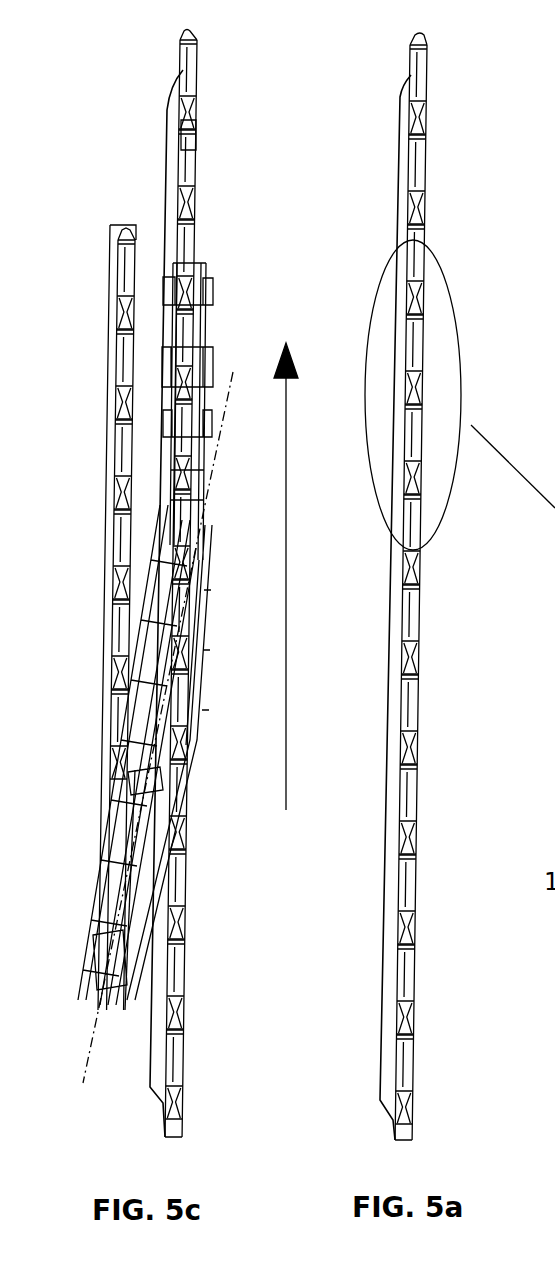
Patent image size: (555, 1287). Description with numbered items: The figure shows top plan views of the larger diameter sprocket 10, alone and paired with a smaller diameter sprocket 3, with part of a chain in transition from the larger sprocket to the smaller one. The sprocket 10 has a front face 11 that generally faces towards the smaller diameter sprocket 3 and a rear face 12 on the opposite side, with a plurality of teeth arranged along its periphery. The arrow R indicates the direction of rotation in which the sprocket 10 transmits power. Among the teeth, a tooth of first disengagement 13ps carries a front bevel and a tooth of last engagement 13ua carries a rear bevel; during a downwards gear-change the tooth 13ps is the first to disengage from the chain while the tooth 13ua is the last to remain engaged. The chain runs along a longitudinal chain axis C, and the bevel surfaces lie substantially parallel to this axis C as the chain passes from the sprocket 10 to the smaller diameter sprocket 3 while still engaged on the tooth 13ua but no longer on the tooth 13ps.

In FIG. 5C, the smaller diameter sprocket 3 is at (107, 200).
In FIG. 5C, the sprocket 10 is at (203, 82).
In FIG. 5A, the sprocket 10 is at (450, 87).
In FIG. 5C, the front face 11 is at (167, 135).
In FIG. 5C, the rear face 12 is at (198, 133).
In FIG. 5C, the tooth of last engagement 13ua is at (191, 590).
In FIG. 5C, the tooth of first disengagement 13ps is at (189, 695).
In FIG. 5C, the chain axis C is at (220, 410).
In FIG. 5C, the direction of rotation R is at (290, 576).